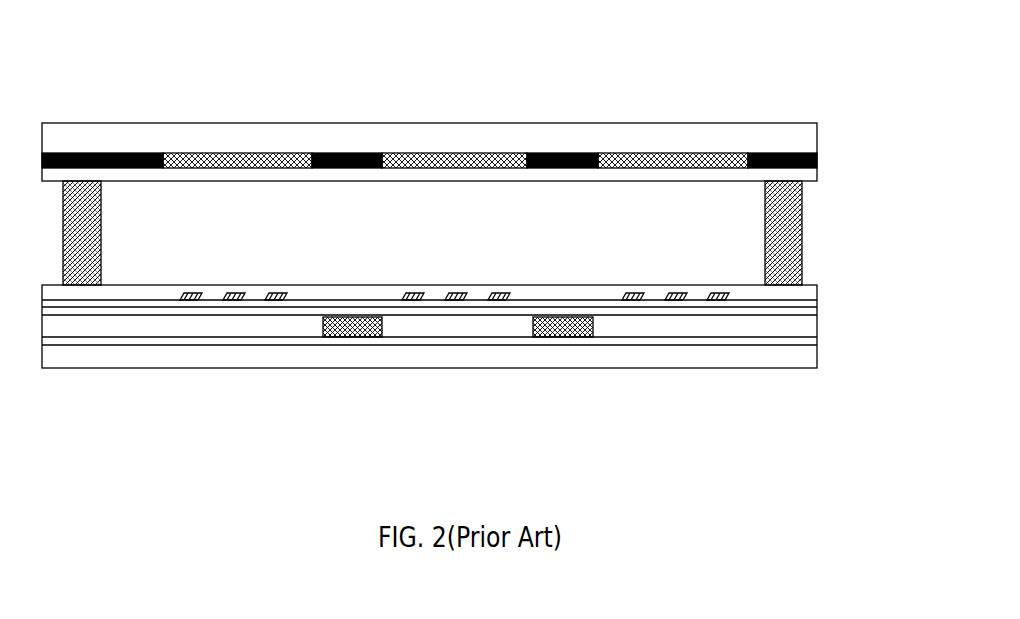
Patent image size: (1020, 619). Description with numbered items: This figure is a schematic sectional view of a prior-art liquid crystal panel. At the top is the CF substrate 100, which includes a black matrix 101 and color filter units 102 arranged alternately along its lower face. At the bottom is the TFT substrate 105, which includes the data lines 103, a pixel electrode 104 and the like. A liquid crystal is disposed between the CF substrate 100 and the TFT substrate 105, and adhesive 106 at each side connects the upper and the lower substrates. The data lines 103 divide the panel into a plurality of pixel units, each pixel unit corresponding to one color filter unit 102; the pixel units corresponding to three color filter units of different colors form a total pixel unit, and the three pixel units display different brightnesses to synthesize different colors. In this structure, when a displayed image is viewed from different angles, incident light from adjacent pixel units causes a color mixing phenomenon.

The CF substrate 100 is at (792, 139).
The black matrix 101 is at (362, 153).
The color filter units 102 is at (251, 160).
The data lines 103 is at (353, 327).
The pixel electrode 104 is at (190, 300).
The TFT substrate 105 is at (800, 359).
The adhesive 106 is at (783, 229).